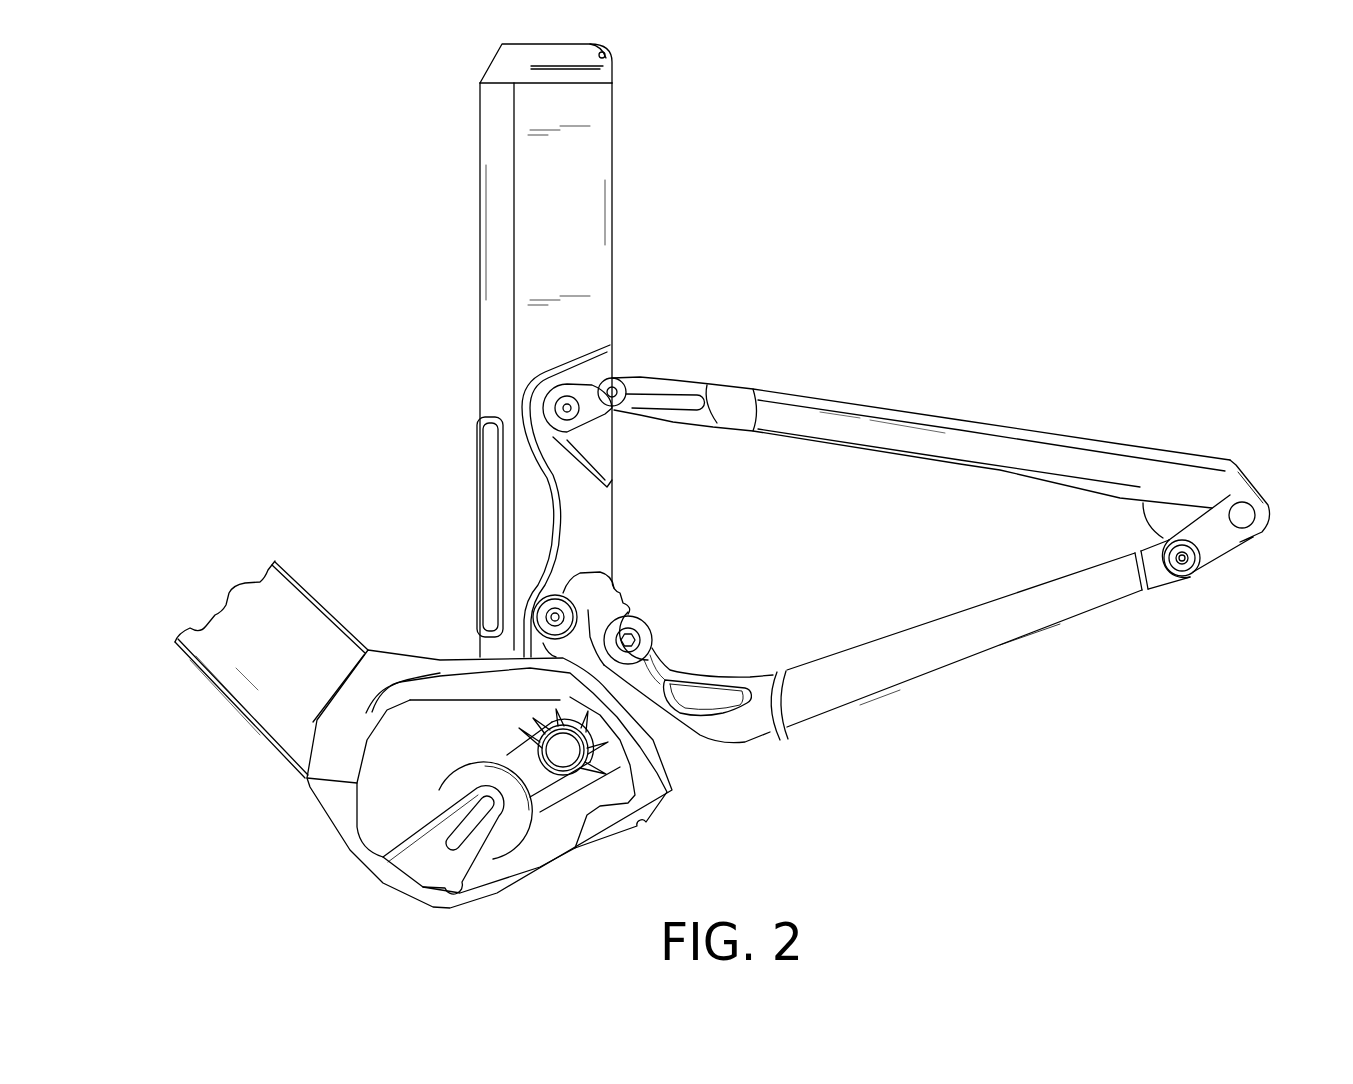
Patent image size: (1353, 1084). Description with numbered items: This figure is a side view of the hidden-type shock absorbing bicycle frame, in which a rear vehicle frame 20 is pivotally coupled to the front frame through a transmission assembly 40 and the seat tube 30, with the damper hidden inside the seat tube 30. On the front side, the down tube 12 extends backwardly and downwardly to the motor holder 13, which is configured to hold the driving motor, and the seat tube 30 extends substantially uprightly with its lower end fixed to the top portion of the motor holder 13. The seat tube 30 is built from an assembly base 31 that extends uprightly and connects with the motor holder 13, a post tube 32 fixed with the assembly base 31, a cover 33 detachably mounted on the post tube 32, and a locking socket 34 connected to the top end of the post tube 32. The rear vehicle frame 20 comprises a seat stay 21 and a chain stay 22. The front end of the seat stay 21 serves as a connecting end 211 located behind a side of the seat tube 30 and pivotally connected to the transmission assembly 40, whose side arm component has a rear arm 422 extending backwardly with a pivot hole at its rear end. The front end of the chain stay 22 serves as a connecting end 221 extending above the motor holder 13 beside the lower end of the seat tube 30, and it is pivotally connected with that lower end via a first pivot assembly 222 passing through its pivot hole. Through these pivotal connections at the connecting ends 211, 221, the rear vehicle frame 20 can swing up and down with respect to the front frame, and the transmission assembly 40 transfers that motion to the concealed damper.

The down tube 12 is at (232, 701).
The motor holder 13 is at (438, 650).
The rear vehicle frame 20 is at (1082, 365).
The seat stay 21 is at (934, 450).
The chain stay 22 is at (963, 664).
The seat tube 30 is at (661, 153).
The assembly base 31 is at (593, 521).
The post tube 32 is at (478, 228).
The cover 33 is at (478, 454).
The locking socket 34 is at (482, 63).
The transmission assembly 40 is at (601, 418).
The connecting end 211 is at (630, 390).
The connecting end 221 is at (656, 672).
The first pivot assembly 222 is at (641, 630).
The rear arm 422 is at (584, 388).